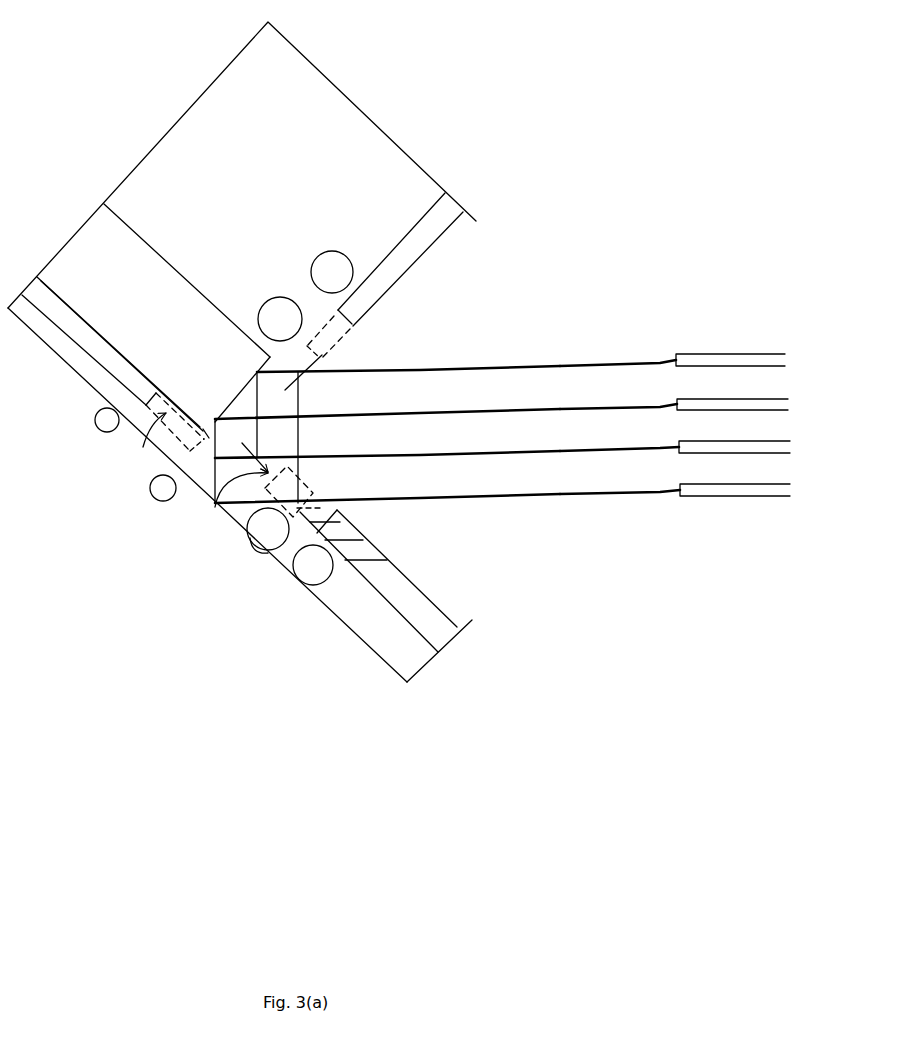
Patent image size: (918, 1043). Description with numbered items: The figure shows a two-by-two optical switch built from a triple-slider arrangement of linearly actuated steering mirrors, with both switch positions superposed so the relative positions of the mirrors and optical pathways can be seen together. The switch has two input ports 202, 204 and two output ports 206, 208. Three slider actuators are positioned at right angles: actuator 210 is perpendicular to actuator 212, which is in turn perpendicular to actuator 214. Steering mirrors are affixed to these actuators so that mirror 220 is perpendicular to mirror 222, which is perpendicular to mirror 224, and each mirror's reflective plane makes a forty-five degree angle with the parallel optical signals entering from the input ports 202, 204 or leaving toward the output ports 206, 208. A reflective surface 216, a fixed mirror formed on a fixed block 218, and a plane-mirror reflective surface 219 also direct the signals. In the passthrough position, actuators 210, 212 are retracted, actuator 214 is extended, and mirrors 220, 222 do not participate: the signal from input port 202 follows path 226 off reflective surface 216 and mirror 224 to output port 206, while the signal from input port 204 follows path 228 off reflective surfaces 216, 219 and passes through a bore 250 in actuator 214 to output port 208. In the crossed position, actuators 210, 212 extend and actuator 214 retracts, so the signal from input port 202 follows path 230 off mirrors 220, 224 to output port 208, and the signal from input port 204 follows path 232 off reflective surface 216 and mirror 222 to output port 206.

The input port 202 is at (750, 362).
The input port 204 is at (749, 407).
The output port 206 is at (756, 451).
The output port 208 is at (755, 495).
The actuator 210 is at (374, 290).
The actuator 212 is at (112, 390).
The actuator 214 is at (351, 592).
The reflective surface 216 is at (251, 430).
The fixed block 218 is at (242, 189).
The reflective surface 219 is at (301, 632).
The mirror 220 is at (303, 362).
The mirror 222 is at (208, 457).
The mirror 224 is at (269, 514).
The path 226 is at (490, 364).
The path 228 is at (478, 410).
The path 230 is at (608, 368).
The path 232 is at (605, 412).
The bore 250 is at (336, 511).